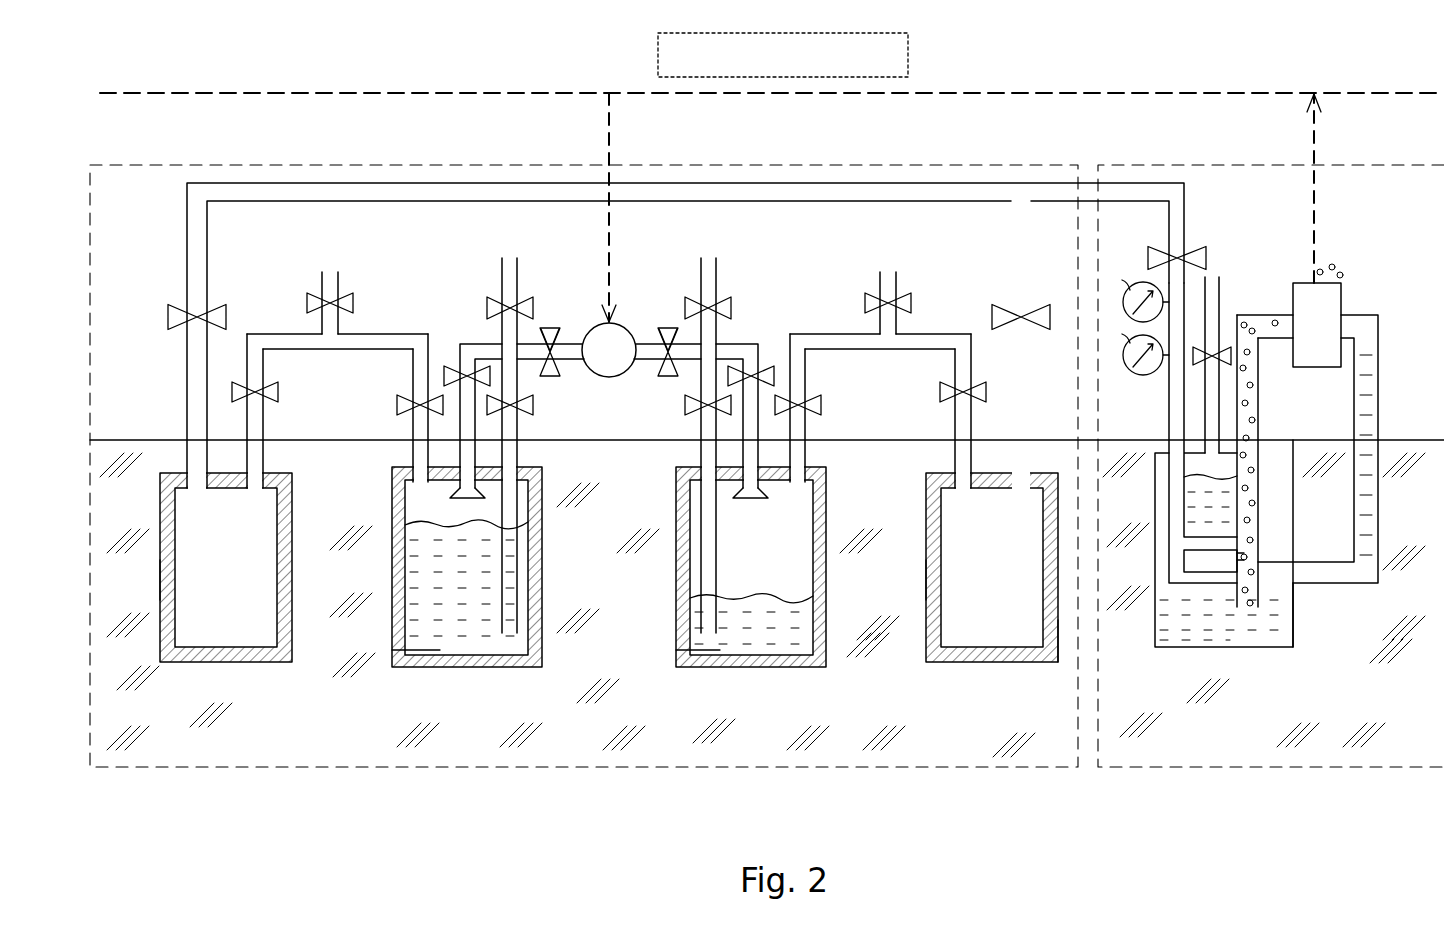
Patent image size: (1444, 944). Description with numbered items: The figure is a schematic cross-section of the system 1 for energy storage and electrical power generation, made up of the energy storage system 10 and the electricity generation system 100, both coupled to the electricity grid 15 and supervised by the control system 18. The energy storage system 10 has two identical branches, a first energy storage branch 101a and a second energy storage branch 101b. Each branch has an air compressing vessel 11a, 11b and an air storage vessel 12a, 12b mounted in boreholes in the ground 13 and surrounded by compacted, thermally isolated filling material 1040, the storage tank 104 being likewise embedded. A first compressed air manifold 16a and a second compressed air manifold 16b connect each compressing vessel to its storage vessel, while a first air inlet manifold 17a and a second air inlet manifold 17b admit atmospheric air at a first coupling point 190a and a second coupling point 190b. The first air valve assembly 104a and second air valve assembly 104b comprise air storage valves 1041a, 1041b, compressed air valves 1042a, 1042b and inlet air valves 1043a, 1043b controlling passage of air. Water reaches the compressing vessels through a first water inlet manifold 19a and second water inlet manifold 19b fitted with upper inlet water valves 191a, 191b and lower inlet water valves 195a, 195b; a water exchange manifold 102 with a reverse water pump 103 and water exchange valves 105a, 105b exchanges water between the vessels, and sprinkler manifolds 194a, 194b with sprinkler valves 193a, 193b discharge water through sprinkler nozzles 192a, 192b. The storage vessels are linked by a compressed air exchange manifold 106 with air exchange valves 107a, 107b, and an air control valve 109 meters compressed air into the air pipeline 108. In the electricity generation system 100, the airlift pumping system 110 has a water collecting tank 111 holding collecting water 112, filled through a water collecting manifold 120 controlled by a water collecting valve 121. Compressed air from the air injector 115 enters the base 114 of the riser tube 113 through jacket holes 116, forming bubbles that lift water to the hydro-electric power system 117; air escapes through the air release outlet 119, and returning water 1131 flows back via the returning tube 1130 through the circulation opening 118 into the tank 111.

The system for energy storage and electrical power generation 1 is at (553, 822).
The energy storage system 10 is at (960, 770).
The electricity generation system 100 is at (1282, 768).
The first energy storage branch 101a is at (352, 692).
The second energy storage branch 101b is at (888, 662).
The water exchange manifold 102 is at (578, 312).
The reverse water pump 103 is at (609, 350).
The storage tank 104 is at (927, 578).
The first air valve assembly 104a is at (312, 268).
The second air valve assembly 104b is at (870, 262).
The filling material 1040 is at (160, 583).
The first air storage valve 1041a is at (280, 396).
The second air storage valve 1041b is at (962, 403).
The first compressed air valve 1042a is at (410, 412).
The second compressed air valve 1042b is at (823, 405).
The first inlet air valve 1043a is at (305, 301).
The second inlet air valve 1043b is at (906, 300).
The first water exchange valve 105a is at (548, 378).
The second water exchange valve 105b is at (670, 378).
The compressed air exchange manifold 106 is at (920, 183).
The first air exchange valve 107a is at (167, 315).
The second air exchange valve 107b is at (998, 312).
The air pipeline 108 is at (1162, 372).
The air control valve 109 is at (1160, 246).
The first air compressing vessel 11a is at (430, 636).
The second air compressing vessel 11b is at (775, 648).
The airlift pumping system 110 is at (1300, 640).
The water collecting tank 111 is at (1275, 650).
The collecting water 112 is at (1158, 638).
The riser tube 113 is at (1262, 592).
The returning tube 1130 is at (1362, 586).
The returning water 1131 is at (1362, 498).
The base of the riser tube 114 is at (1243, 640).
The air injector 115 is at (1213, 587).
The jacket holes 116 is at (1232, 548).
The hydro-electric power system 117 is at (1342, 300).
The circulation opening 118 is at (1238, 578).
The air release outlet 119 is at (1335, 270).
The first air storage vessel 12a is at (242, 635).
The second air storage vessel 12b is at (975, 636).
The water collecting manifold 120 is at (1222, 290).
The water collecting valve 121 is at (1228, 345).
The ground 13 is at (207, 747).
The electricity grid 15 is at (200, 94).
The first compressed air manifold 16a is at (245, 345).
The second compressed air manifold 16b is at (806, 336).
The first air inlet manifold 17a is at (340, 310).
The second air inlet manifold 17b is at (908, 340).
The control system 18 is at (909, 56).
The first water inlet manifold 19a is at (507, 590).
The second water inlet manifold 19b is at (702, 598).
The first coupling point 190a is at (330, 342).
The second coupling point 190b is at (893, 344).
The first upper inlet water valve 191a is at (520, 298).
The second upper inlet water valve 191b is at (698, 298).
The first sprinkler nozzle 192a is at (470, 499).
The second sprinkler nozzle 192b is at (752, 499).
The first sprinkler valve 193a is at (462, 365).
The second sprinkler valve 193b is at (752, 365).
The first sprinkler manifold 194a is at (474, 344).
The second sprinkler manifold 194b is at (752, 344).
The first lower inlet water valve 195a is at (535, 412).
The second lower inlet water valve 195b is at (683, 412).